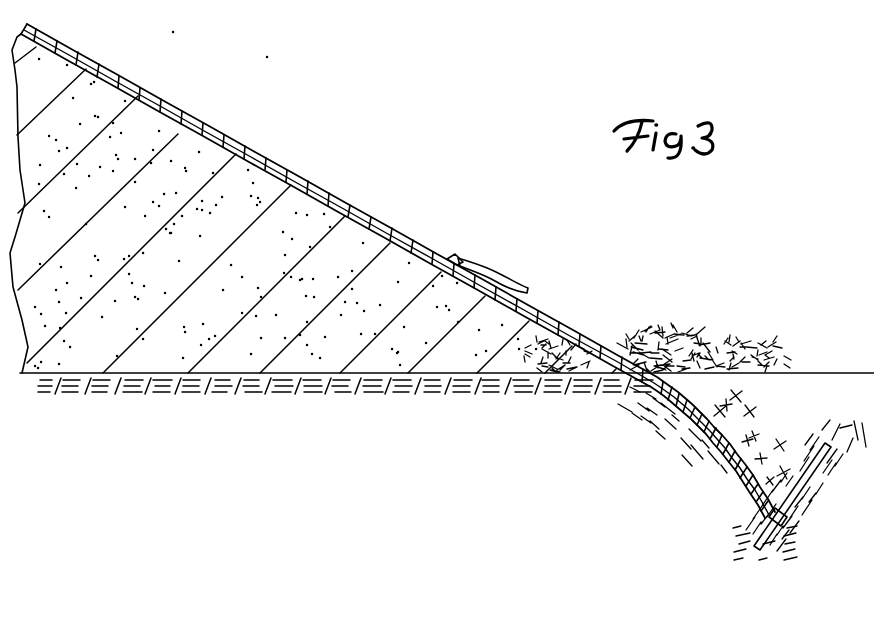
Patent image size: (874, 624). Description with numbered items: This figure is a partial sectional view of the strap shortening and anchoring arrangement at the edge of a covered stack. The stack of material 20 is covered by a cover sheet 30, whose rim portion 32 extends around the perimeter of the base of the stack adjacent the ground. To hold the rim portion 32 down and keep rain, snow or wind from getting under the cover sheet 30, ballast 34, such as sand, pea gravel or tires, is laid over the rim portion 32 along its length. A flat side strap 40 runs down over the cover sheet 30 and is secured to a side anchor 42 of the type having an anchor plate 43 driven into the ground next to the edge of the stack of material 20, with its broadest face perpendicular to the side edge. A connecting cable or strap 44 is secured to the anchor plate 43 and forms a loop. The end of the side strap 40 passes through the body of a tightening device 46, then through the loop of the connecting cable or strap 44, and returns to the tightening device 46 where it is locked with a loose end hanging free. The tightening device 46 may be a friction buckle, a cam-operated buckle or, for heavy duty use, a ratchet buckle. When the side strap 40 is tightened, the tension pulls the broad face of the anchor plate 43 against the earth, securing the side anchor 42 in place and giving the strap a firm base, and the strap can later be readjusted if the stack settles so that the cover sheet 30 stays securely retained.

The stack of material 20 is at (387, 360).
The cover sheet 30 is at (162, 122).
The rim portion 32 is at (604, 390).
The ballast 34 is at (697, 333).
The side strap 40 is at (206, 126).
The side anchor 42 is at (701, 486).
The anchor plate 43 is at (742, 531).
The connecting cable or strap 44 is at (730, 423).
The tightening device 46 is at (453, 257).